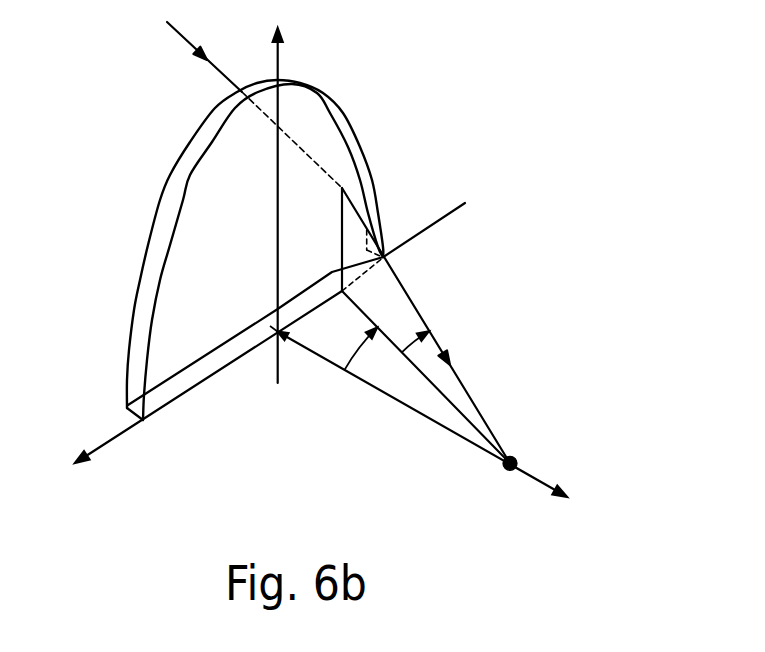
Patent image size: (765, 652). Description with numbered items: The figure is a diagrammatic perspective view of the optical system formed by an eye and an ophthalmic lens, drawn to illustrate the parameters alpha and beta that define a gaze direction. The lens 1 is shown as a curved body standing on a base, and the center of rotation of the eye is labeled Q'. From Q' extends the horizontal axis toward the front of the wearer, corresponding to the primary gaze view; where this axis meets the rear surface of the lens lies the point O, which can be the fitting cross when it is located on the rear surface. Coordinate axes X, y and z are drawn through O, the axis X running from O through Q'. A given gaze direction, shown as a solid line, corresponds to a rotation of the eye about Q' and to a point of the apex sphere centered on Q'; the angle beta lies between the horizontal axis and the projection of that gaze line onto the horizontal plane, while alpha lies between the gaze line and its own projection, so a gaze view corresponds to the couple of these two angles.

The reflector 1 is at (172, 183).
The point O is at (271, 353).
The center of rotation of the eye Q' is at (523, 450).
The X axis X is at (432, 415).
The y axis y is at (285, 201).
The z axis z is at (208, 394).